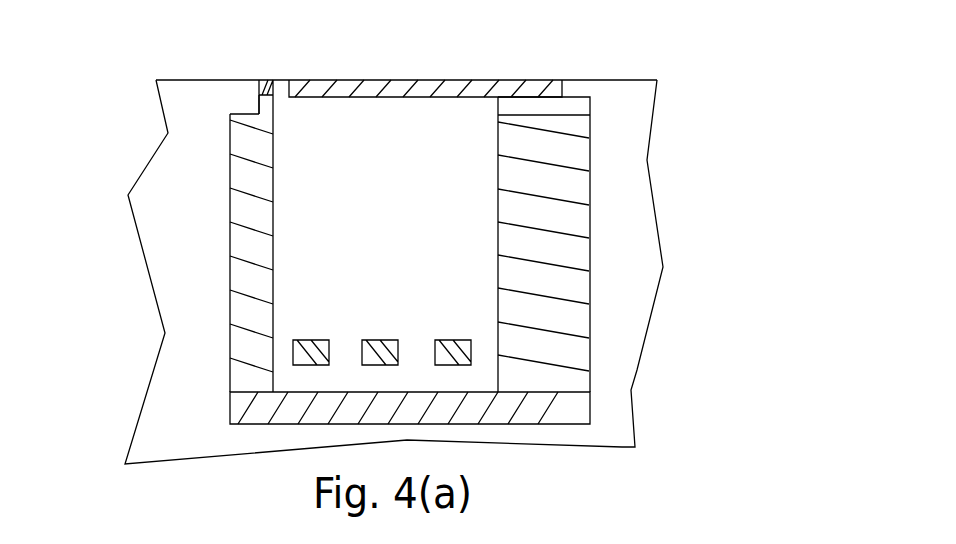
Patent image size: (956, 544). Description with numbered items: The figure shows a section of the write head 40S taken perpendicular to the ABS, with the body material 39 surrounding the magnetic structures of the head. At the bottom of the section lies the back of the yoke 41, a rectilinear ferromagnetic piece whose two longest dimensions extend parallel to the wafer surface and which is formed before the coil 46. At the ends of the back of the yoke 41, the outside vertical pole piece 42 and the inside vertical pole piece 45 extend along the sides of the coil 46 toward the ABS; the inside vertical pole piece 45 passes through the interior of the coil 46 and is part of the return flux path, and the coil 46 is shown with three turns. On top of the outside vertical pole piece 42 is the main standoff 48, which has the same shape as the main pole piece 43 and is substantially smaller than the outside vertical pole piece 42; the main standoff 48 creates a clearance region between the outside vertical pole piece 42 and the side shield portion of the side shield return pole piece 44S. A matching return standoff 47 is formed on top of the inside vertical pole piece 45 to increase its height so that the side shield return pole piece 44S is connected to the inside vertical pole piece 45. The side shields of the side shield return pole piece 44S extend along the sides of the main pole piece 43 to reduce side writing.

The body material 39 is at (633, 308).
The write head 40S is at (120, 118).
The air bearing surface ABS is at (638, 70).
The back of the yoke 41 is at (252, 410).
The outside vertical pole piece 42 is at (247, 245).
The main pole piece 43 is at (263, 80).
The side shield return pole piece 44S is at (443, 85).
The inside vertical pole piece 45 is at (557, 217).
The coil 46 is at (450, 342).
The return standoff 47 is at (503, 107).
The main standoff 48 is at (268, 105).